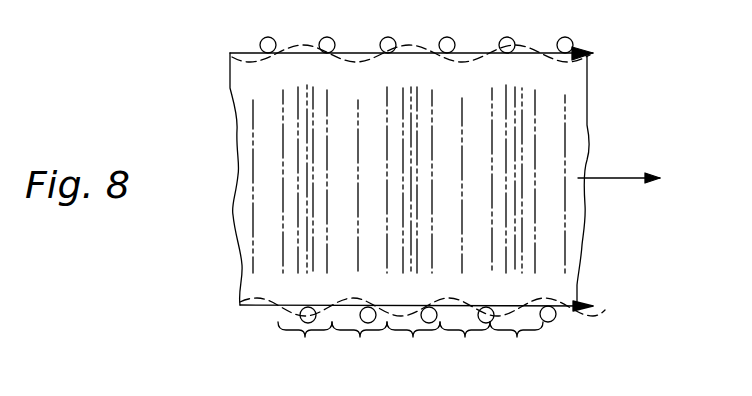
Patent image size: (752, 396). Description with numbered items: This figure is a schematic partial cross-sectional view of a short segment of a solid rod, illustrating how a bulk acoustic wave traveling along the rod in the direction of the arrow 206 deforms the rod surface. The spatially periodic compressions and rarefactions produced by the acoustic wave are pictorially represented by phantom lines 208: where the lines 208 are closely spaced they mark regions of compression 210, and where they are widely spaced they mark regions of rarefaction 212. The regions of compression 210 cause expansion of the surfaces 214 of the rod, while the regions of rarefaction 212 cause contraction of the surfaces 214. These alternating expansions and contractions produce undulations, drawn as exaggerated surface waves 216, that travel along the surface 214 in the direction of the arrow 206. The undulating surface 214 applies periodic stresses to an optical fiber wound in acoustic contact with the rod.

The arrow 206 is at (620, 175).
The phantom lines 208 is at (537, 247).
The regions of compression 210 is at (305, 337).
The regions of rarefaction 212 is at (360, 337).
The surfaces of the rod 214 is at (242, 53).
The exaggerated surface waves 216 is at (527, 44).